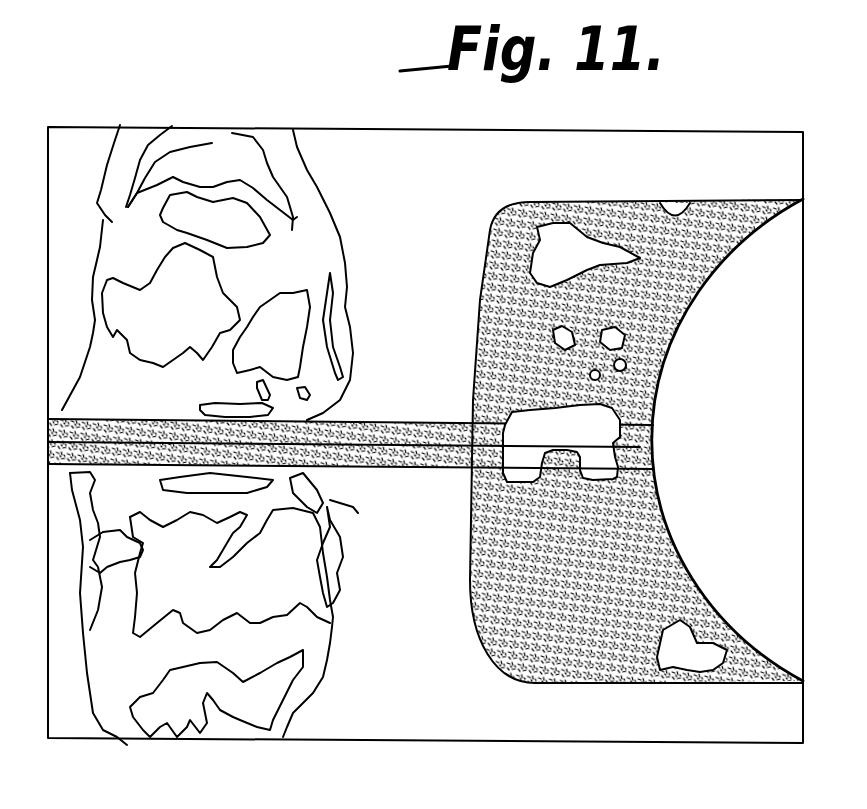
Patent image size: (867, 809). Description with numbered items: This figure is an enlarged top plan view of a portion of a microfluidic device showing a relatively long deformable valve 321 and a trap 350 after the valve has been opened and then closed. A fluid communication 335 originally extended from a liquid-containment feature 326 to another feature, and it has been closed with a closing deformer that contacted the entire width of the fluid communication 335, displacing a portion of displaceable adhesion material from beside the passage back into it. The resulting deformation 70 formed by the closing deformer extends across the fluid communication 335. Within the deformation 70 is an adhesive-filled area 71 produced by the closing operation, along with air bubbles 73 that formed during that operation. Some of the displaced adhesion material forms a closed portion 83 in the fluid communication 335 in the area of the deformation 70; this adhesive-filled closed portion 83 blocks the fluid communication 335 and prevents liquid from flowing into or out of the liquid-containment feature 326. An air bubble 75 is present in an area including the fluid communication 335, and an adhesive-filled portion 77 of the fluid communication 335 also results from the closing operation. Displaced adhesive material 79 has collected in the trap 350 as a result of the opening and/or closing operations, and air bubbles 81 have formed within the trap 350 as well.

The deformable valve 321 is at (480, 768).
The deformation 70 is at (402, 680).
The air bubbles 73 is at (213, 142).
The adhesive-filled area 71 is at (317, 240).
The closed portion 83 is at (296, 430).
The displaced adhesive material 79 is at (577, 597).
The liquid-containment feature 326 is at (733, 297).
The air bubble 75 is at (547, 412).
The fluid communication 335 is at (350, 425).
The adhesive-filled portion 77 is at (47, 440).
The air bubbles 81 is at (567, 250).
The trap 350 is at (700, 212).